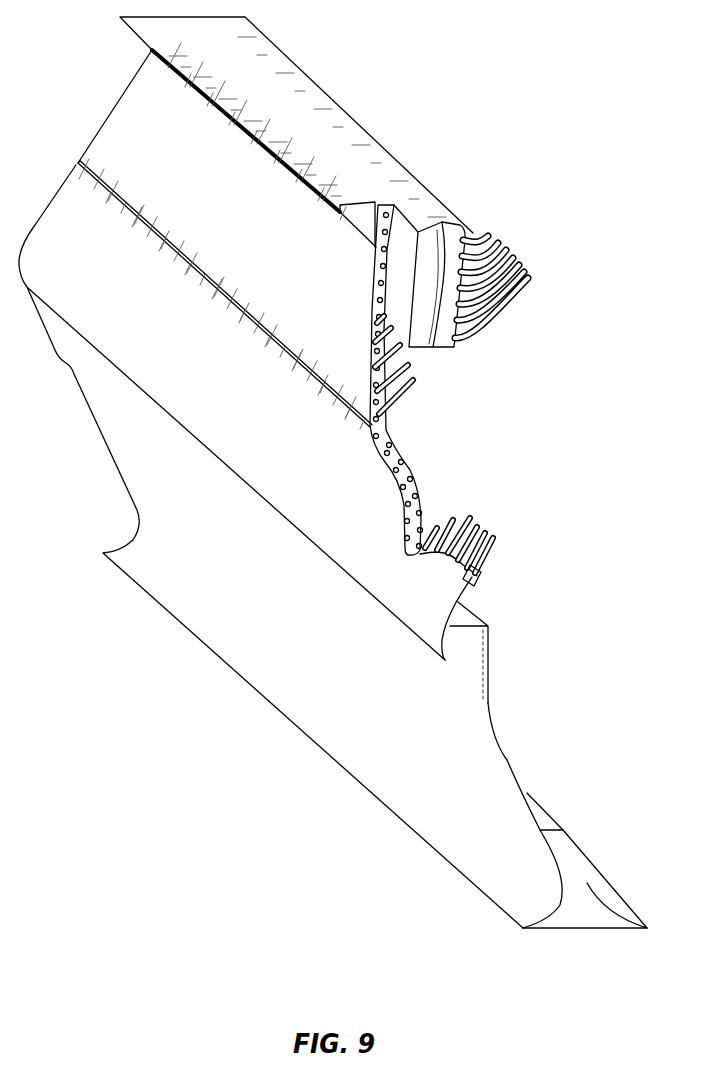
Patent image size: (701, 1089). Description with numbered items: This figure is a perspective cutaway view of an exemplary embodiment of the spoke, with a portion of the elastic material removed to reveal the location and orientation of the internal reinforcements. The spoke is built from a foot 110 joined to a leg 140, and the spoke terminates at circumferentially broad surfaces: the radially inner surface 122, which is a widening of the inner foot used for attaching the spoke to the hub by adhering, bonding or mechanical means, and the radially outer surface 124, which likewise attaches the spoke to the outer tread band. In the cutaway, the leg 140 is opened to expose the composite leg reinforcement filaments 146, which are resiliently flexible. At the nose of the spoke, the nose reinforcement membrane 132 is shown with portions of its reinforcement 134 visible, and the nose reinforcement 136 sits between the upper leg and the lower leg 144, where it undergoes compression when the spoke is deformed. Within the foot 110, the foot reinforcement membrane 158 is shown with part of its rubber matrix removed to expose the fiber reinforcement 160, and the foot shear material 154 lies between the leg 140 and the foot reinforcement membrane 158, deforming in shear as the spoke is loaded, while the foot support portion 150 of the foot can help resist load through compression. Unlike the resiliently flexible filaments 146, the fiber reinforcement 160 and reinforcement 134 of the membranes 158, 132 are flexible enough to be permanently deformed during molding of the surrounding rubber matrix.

The foot 110 is at (560, 853).
The radially inner surface 122 is at (277, 80).
The radially outer surface 124 is at (566, 932).
The nose reinforcement membrane 132 is at (452, 577).
The reinforcement of the nose reinforcement membrane 134 is at (386, 464).
The nose reinforcement 136 is at (480, 635).
The leg 140 is at (110, 143).
The lower leg 144 is at (465, 782).
The leg reinforcement filaments 146 is at (406, 390).
The foot support portion 150 is at (357, 212).
The foot shear material 154 is at (427, 248).
The foot reinforcement membrane 158 is at (450, 231).
The fiber reinforcement 160 is at (493, 304).